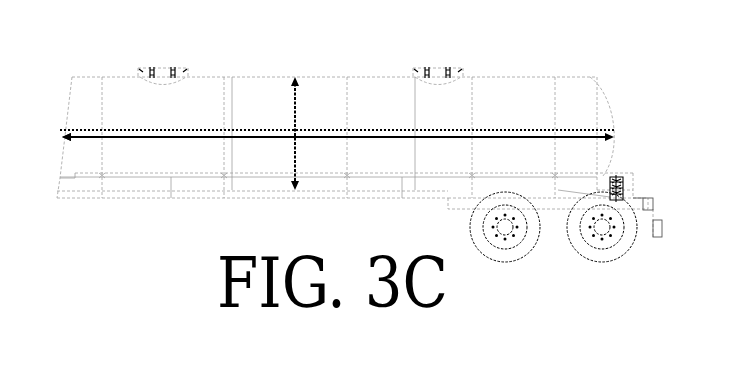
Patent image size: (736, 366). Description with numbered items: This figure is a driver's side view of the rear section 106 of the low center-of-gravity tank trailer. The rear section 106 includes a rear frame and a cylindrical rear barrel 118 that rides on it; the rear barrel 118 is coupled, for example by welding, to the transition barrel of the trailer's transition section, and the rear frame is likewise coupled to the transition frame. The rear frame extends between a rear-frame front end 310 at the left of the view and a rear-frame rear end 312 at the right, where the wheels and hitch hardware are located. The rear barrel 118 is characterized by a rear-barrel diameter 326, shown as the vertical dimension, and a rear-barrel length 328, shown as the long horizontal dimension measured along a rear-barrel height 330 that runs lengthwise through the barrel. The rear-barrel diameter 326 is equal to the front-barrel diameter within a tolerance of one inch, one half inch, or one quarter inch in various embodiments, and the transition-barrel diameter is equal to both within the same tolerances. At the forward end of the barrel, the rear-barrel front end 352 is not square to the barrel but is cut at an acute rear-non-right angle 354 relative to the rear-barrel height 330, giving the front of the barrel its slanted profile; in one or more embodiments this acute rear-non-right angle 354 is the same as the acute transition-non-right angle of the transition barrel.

The rear section 106 is at (590, 77).
The rear barrel 118 is at (92, 77).
The rear-frame front end 310 is at (58, 197).
The rear-frame rear end 312 is at (652, 205).
The rear-barrel diameter 326 is at (295, 105).
The rear-barrel length 328 is at (404, 138).
The rear-barrel height 330 is at (404, 130).
The rear-barrel front end 352 is at (63, 155).
The acute rear-non-right angle 354 is at (62, 128).